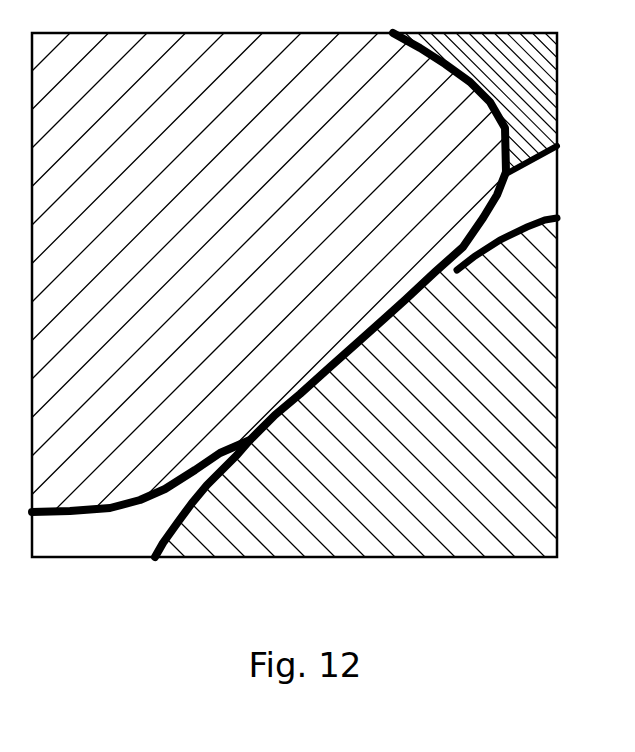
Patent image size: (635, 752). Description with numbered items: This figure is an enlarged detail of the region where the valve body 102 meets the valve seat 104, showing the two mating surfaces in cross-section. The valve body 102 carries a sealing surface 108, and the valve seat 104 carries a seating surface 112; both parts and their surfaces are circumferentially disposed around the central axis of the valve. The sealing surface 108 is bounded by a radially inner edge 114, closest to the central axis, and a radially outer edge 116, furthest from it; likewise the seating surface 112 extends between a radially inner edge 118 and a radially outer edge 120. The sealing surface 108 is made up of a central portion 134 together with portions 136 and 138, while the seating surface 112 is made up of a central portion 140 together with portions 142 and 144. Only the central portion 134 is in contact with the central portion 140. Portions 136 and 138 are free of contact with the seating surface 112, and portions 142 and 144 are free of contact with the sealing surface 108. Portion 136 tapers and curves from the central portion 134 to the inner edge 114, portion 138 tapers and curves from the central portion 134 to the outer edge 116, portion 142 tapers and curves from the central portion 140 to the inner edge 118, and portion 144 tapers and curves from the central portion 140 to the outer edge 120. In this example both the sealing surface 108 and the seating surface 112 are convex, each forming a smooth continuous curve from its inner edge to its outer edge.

The valve body 102 is at (505, 115).
The valve seat 104 is at (153, 543).
The sealing surface 108 is at (453, 244).
The seating surface 112 is at (457, 282).
The radially inner edge 114 is at (115, 502).
The radially outer edge 116 is at (503, 178).
The radially inner edge 118 is at (172, 542).
The radially outer edge 120 is at (548, 225).
The central portion 134 is at (355, 340).
The portion 136 is at (177, 477).
The portion 138 is at (478, 221).
The central portion 140 is at (320, 378).
The portion 142 is at (222, 477).
The portion 144 is at (482, 263).